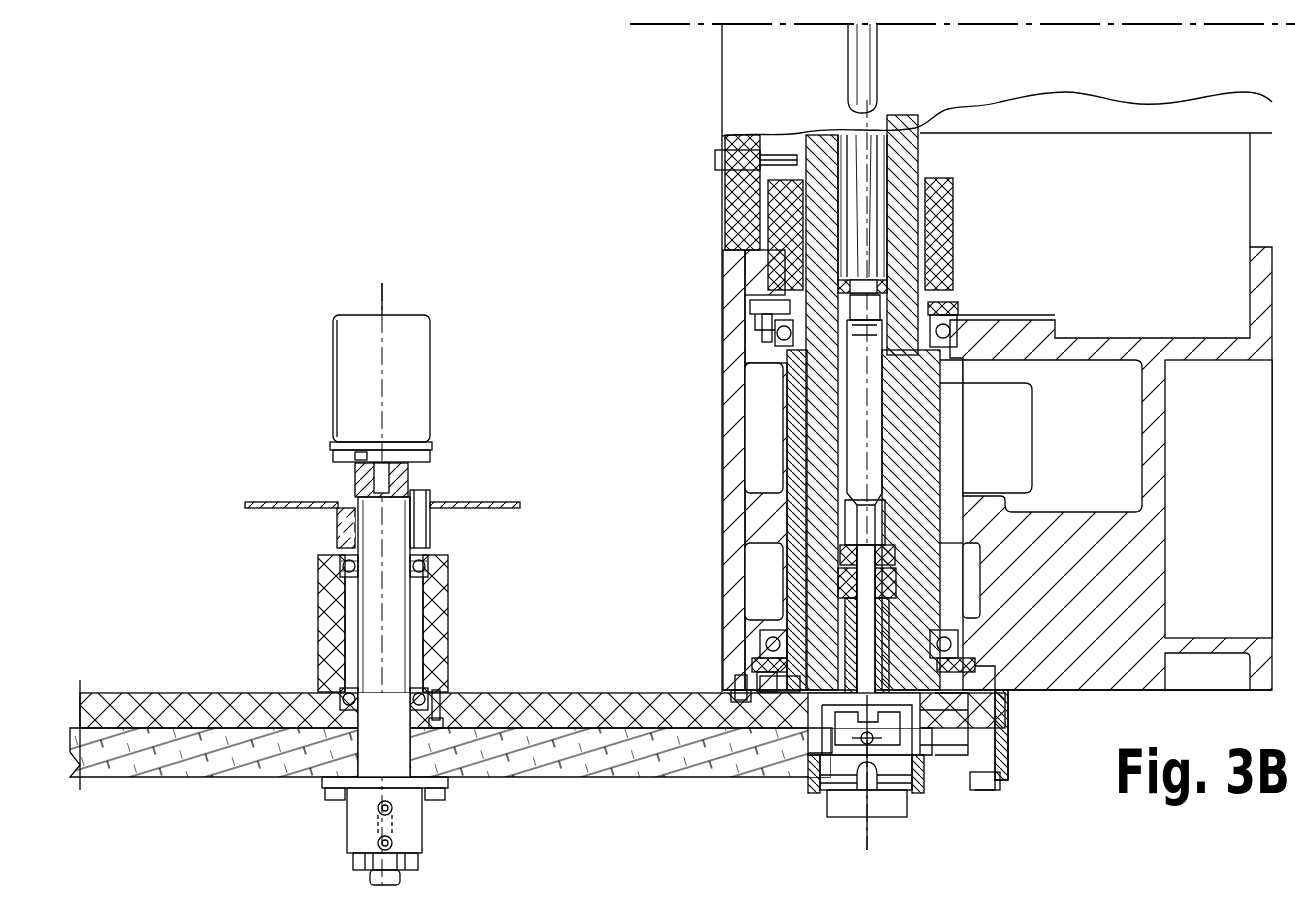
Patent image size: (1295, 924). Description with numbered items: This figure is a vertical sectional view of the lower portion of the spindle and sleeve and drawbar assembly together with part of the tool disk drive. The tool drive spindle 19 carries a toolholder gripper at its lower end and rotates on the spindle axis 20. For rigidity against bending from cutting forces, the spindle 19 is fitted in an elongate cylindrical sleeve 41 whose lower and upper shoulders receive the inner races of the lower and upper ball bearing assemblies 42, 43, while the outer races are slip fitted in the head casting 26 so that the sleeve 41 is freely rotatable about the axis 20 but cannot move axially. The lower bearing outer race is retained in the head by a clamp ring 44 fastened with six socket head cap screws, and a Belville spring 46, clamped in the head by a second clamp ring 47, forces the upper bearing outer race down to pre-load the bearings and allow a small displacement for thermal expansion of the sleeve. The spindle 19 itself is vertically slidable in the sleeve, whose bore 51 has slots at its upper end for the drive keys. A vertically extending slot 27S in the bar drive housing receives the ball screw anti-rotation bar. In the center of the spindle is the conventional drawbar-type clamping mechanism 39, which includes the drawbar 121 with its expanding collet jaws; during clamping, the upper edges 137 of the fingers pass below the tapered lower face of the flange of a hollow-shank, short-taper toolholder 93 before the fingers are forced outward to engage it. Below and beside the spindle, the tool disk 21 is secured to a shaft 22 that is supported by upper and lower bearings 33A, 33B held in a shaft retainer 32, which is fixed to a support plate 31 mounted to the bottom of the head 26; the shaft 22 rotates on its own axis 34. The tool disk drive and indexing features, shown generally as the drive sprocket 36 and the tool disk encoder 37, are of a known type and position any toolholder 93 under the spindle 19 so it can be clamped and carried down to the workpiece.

The spindle 19 is at (814, 365).
The axis 20 is at (870, 838).
The tool disk 21 is at (580, 765).
The shaft 22 is at (400, 612).
The head casting 26 is at (733, 273).
The slot 27S is at (846, 79).
The support plate 31 is at (585, 695).
The shaft retainer 32 is at (322, 615).
The upper bearing 33A is at (432, 565).
The lower bearing 33B is at (438, 696).
The axis 34 is at (384, 290).
The drive sprocket 36 is at (247, 503).
The tool disk encoder 37 is at (335, 345).
The clamping mechanism 39 is at (838, 592).
The sleeve 41 is at (792, 454).
The lower ball bearing assembly 42 is at (760, 643).
The upper ball bearing assembly 43 is at (775, 336).
The clamp ring 44 is at (755, 675).
The Belville spring 46 is at (748, 304).
The clamp ring 47 is at (965, 312).
The bore 51 is at (808, 208).
The toolholder 93 is at (915, 742).
The drawbar 121 is at (848, 380).
The upper edges 137 is at (836, 603).